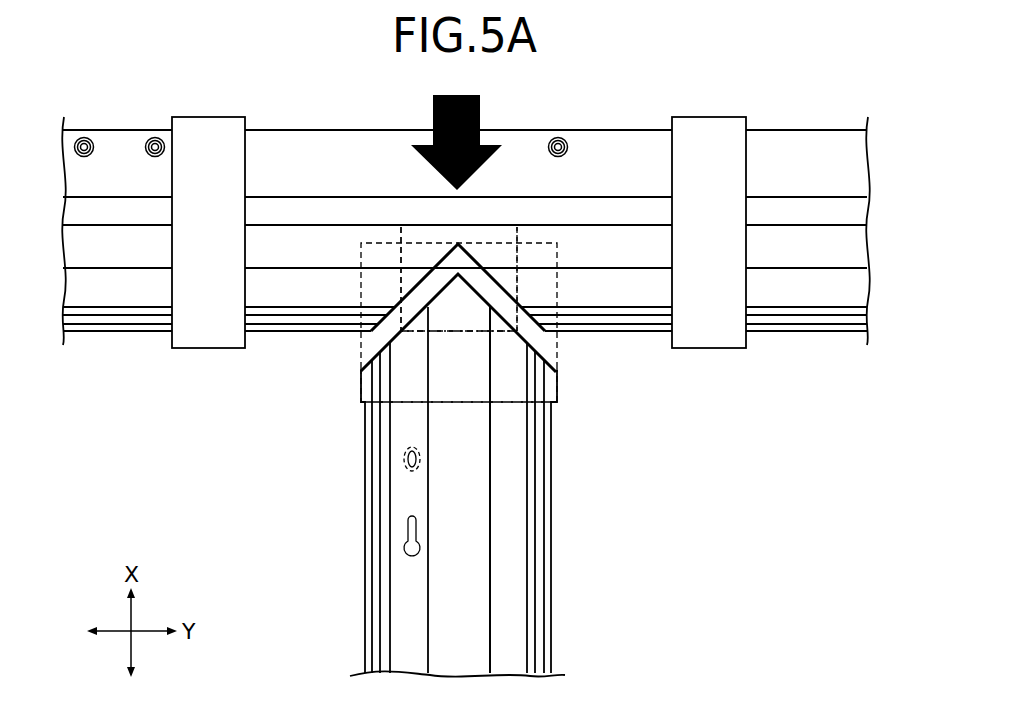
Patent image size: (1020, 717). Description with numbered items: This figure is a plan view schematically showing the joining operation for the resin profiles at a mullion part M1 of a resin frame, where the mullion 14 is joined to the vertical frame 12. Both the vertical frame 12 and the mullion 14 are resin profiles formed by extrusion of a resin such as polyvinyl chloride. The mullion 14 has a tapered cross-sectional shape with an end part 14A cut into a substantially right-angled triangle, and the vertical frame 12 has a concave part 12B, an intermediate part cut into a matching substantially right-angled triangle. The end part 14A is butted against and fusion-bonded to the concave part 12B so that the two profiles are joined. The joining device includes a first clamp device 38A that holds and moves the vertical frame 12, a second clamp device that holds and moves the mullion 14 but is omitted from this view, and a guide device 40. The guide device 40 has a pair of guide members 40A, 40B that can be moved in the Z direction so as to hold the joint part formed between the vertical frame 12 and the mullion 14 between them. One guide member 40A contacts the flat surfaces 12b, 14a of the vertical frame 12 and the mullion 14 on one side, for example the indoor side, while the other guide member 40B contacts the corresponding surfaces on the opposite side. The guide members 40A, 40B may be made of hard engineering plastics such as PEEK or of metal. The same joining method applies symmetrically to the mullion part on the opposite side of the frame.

The vertical frame 12 is at (633, 140).
The concave part 12B is at (442, 263).
The surface of the vertical frame 12b is at (790, 235).
The first clamp device 38A is at (210, 130).
The mullion 14 is at (518, 602).
The surface of the mullion 14a is at (472, 493).
The end part of the mullion 14A is at (372, 338).
The guide device 40 is at (655, 343).
The guide member 40A is at (517, 260).
The guide member 40B is at (557, 352).
The mullion part M1 is at (338, 377).